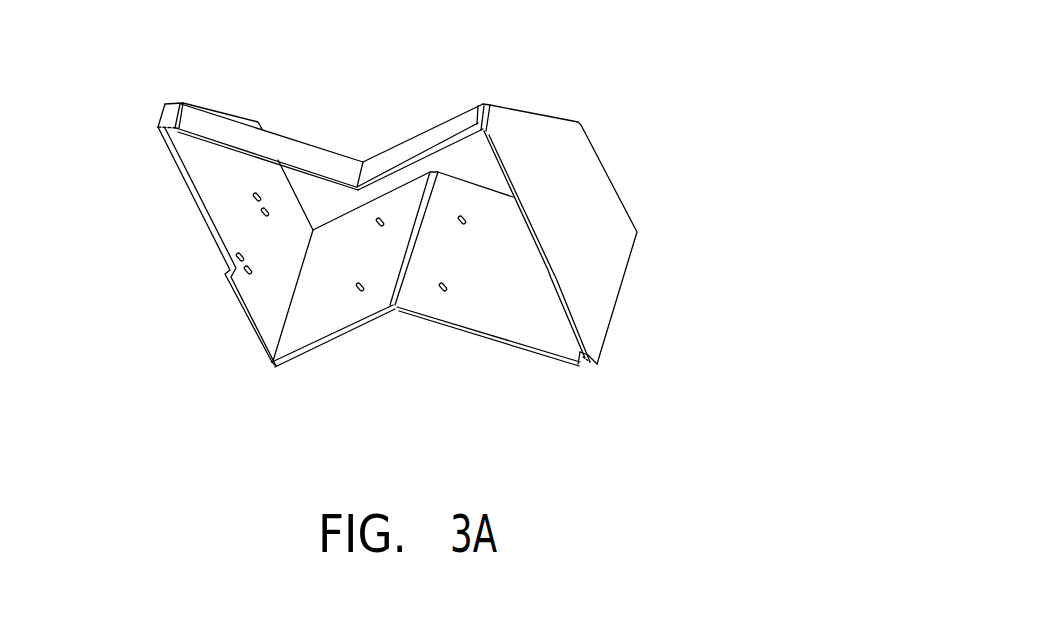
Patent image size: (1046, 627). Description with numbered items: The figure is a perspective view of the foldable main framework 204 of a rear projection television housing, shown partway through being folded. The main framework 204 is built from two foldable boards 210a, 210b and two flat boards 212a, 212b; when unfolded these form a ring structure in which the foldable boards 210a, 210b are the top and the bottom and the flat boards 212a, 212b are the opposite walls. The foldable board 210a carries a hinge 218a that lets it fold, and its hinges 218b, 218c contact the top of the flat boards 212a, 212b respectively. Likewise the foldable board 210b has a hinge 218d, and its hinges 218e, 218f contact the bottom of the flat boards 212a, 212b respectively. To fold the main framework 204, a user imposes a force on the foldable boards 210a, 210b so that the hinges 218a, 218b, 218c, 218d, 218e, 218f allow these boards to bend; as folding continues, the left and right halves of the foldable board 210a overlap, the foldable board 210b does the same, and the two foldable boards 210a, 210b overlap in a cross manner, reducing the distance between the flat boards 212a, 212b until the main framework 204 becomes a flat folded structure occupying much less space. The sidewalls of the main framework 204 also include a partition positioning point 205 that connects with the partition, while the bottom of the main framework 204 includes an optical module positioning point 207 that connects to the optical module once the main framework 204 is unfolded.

The main framework 204 is at (687, 44).
The partition positioning point 205 is at (250, 275).
The optical module positioning point 207 is at (441, 292).
The foldable board 210a is at (300, 155).
The foldable board 210b is at (347, 312).
The flat board 212a is at (587, 210).
The flat board 212b is at (225, 200).
The hinge 218a is at (356, 186).
The hinge 218b is at (490, 133).
The hinge 218c is at (172, 152).
The hinge 218d is at (402, 310).
The hinge 218e is at (585, 357).
The hinge 218f is at (278, 337).